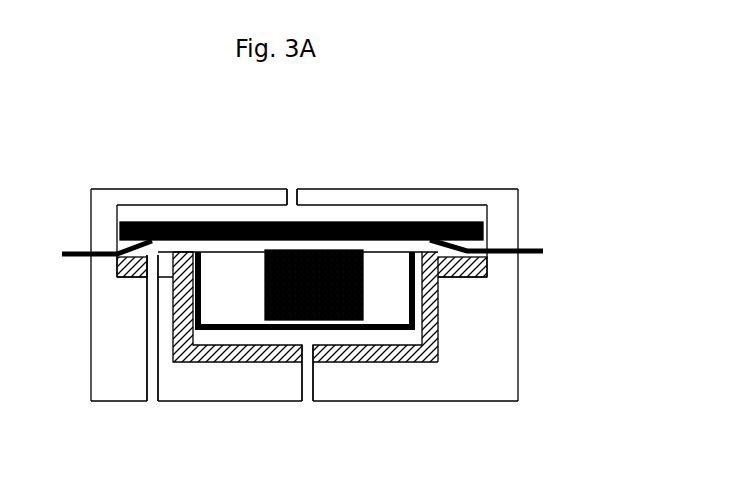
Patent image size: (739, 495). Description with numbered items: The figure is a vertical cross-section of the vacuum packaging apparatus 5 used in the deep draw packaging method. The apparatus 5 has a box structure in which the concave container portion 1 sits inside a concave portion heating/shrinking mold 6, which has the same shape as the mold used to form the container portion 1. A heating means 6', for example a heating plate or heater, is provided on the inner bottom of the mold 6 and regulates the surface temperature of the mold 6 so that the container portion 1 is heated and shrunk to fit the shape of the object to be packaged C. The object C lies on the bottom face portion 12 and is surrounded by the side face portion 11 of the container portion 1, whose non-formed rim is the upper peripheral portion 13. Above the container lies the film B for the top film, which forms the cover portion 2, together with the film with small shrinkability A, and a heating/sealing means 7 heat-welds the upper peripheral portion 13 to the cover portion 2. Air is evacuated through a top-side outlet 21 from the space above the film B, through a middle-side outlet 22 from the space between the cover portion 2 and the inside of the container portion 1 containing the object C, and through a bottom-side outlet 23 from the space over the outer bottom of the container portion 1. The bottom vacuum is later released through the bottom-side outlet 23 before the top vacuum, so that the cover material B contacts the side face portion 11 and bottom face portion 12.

The concave container portion 1 is at (403, 342).
The side face portion 11 is at (432, 330).
The bottom face portion 12 is at (413, 362).
The upper peripheral portion 13 is at (412, 323).
The cover portion 2 is at (117, 247).
The top-side outlet 21 is at (293, 183).
The middle-side outlet 22 is at (153, 387).
The bottom-side outlet 23 is at (308, 393).
The vacuum packaging apparatus 5 is at (370, 295).
The concave portion heating/shrinking mold 6 is at (347, 295).
The heating means 6' is at (341, 272).
The heating/sealing means 7 is at (483, 228).
The film with small shrinkability A is at (80, 257).
The film for top film B is at (80, 253).
The object to be packaged C is at (280, 250).